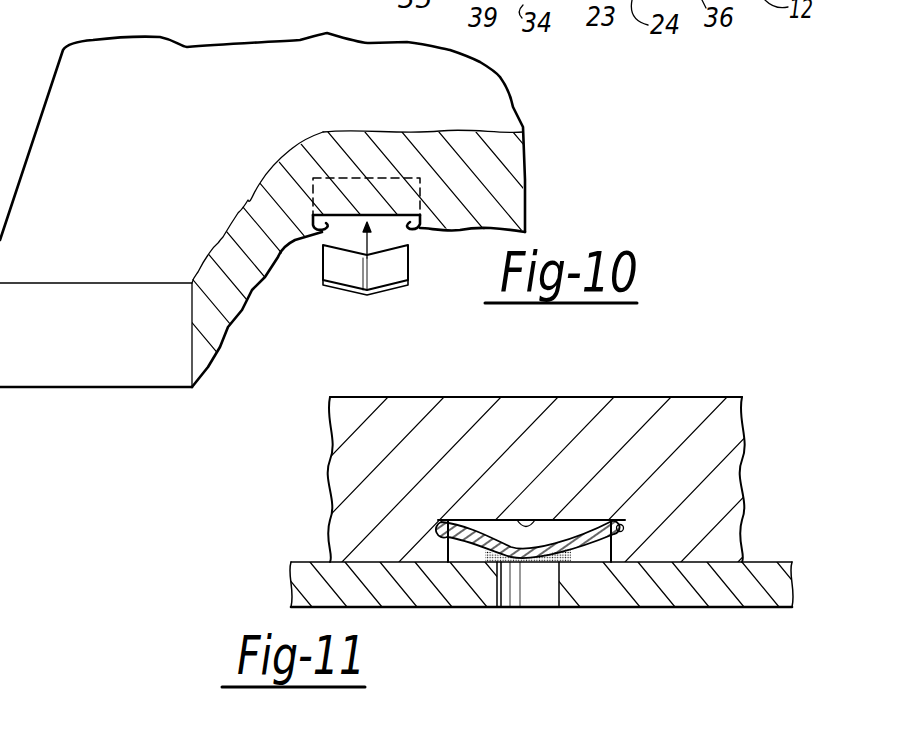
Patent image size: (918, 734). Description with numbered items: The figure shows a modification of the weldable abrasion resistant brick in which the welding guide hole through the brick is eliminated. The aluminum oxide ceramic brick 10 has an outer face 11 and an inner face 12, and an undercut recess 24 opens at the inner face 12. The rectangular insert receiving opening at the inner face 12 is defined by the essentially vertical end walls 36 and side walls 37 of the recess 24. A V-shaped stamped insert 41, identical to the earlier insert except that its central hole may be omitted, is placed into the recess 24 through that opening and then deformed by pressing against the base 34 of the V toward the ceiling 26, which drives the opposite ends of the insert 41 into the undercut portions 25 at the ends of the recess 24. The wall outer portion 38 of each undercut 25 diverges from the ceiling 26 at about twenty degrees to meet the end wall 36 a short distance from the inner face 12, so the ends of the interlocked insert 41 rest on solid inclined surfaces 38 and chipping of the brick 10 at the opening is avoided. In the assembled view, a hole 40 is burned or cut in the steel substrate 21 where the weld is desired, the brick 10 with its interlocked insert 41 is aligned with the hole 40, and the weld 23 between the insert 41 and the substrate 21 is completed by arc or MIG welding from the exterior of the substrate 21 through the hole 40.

In FIG. 10, the ceramic brick 10 is at (523, 129).
In FIG. 11, the ceramic brick 10 is at (716, 396).
In FIG. 10, the outer face 11 is at (118, 187).
In FIG. 11, the outer face 11 is at (353, 396).
In FIG. 10, the inner face 12 is at (32, 390).
In FIG. 11, the inner face 12 is at (373, 567).
In FIG. 11, the steel substrate 21 is at (777, 585).
In FIG. 11, the tab of fastener 23 is at (470, 562).
In FIG. 10, the recess 24 is at (330, 224).
In FIG. 11, the recess 24 is at (462, 556).
In FIG. 10, the undercut portions 25 is at (407, 230).
In FIG. 11, the undercut portions 25 is at (433, 520).
In FIG. 10, the ceiling 26 is at (355, 215).
In FIG. 11, the ceiling 26 is at (525, 522).
In FIG. 10, the base of the V 34 is at (363, 303).
In FIG. 11, the end walls 36 is at (603, 557).
In FIG. 11, the side walls 37 is at (490, 527).
In FIG. 11, the wall outer portion 38 is at (623, 520).
In FIG. 11, the hole 40 is at (558, 583).
In FIG. 10, the insert 41 is at (390, 268).
In FIG. 11, the insert 41 is at (575, 520).